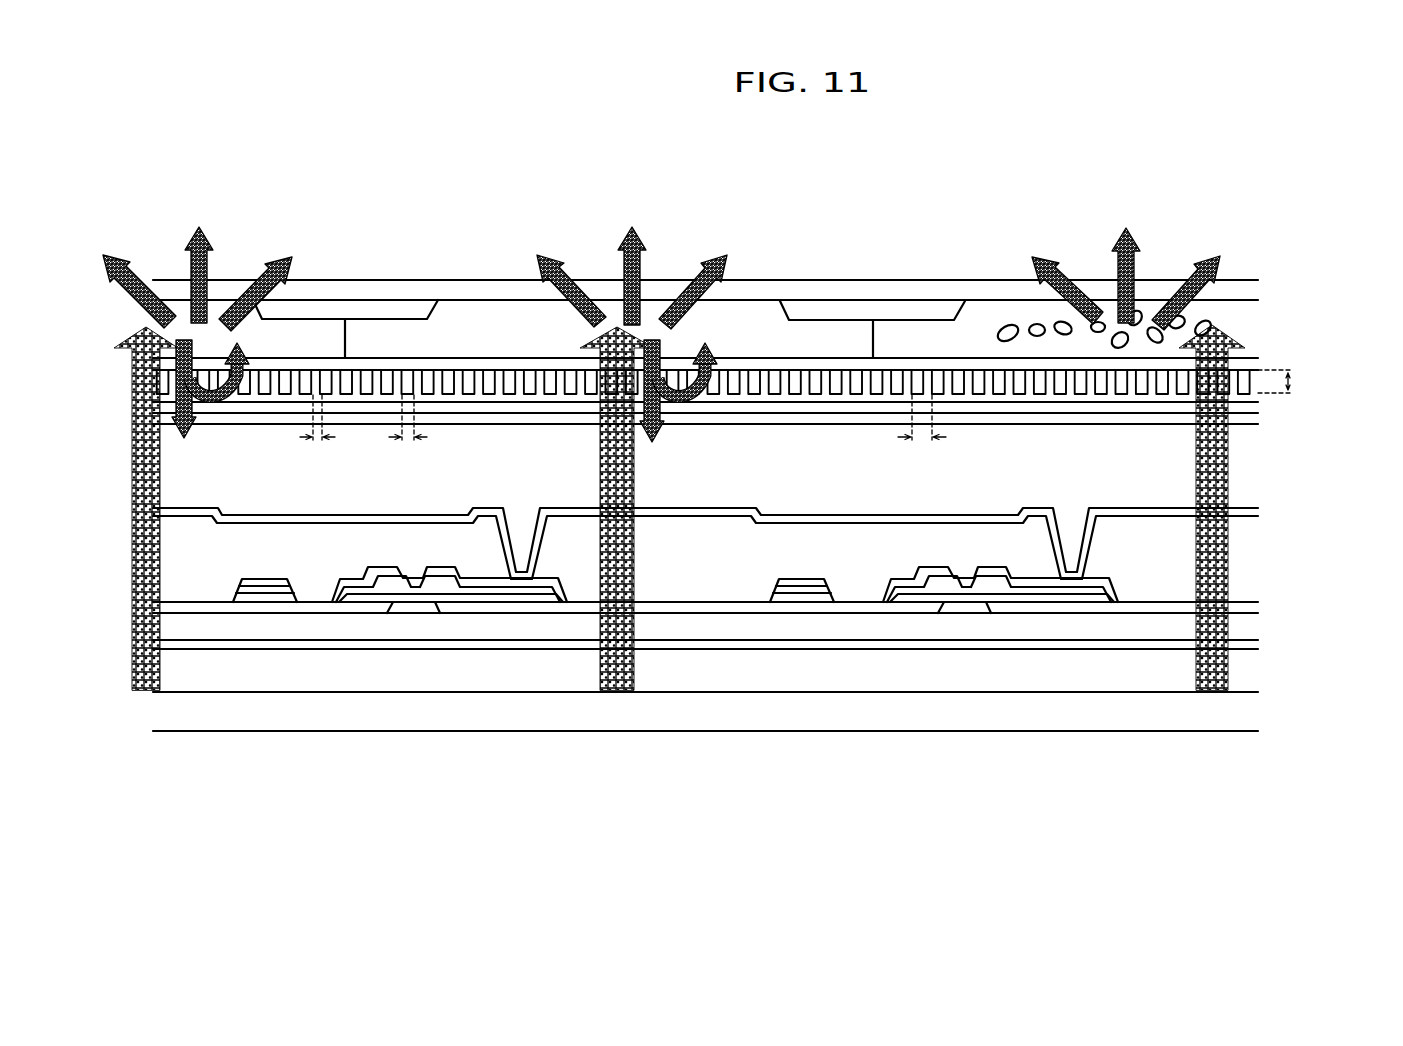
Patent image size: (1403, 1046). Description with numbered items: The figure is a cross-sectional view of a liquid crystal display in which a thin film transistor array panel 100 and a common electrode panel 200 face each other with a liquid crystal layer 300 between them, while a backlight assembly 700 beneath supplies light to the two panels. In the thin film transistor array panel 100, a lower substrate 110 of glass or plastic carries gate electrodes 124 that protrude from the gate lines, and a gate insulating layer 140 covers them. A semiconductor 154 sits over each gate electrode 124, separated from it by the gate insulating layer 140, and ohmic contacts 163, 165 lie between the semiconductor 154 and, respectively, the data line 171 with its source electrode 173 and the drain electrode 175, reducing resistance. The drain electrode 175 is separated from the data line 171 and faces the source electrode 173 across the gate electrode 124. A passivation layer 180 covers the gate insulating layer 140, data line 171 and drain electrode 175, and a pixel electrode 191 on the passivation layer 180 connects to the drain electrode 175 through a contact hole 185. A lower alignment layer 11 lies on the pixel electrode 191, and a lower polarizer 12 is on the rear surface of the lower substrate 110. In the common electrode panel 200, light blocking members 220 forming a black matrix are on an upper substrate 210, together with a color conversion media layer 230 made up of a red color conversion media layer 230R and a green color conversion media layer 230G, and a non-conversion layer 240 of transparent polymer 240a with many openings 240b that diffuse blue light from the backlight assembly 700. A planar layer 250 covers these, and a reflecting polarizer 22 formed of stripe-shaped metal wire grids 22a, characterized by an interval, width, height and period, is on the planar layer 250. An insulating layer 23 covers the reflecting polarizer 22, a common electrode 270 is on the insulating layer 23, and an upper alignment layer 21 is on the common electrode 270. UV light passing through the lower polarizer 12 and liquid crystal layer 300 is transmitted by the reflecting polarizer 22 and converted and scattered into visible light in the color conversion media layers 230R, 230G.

The common electrode panel 200 is at (772, 297).
The upper substrate 210 is at (1239, 290).
The light blocking member 220 is at (388, 308).
The color conversion media layer 230 is at (384, 230).
The red color conversion media layer 230R is at (303, 332).
The green color conversion media layer 230G is at (425, 252).
The reflecting polarizer 22 is at (835, 259).
The wire grid 22a is at (792, 370).
The non-conversion layer 240 is at (1077, 234).
The transparent polymer 240a is at (958, 343).
The opening 240b is at (1003, 323).
The planar layer 250 is at (1253, 363).
The insulating layer 23 is at (1237, 398).
The common electrode 270 is at (1237, 409).
The upper alignment layer 21 is at (738, 448).
The liquid crystal layer 300 is at (745, 443).
The thin film transistor array panel 100 is at (772, 626).
The lower alignment layer 11 is at (1262, 508).
The pixel electrode 191 is at (1262, 516).
The contact hole 185 is at (525, 513).
The passivation layer 180 is at (1255, 567).
The gate insulating layer 140 is at (1262, 602).
The lower substrate 110 is at (1262, 614).
The lower polarizer 12 is at (1262, 645).
The data line 171 is at (277, 586).
The semiconductor 154 is at (245, 600).
The ohmic contact 163 is at (365, 590).
The ohmic contact 165 is at (492, 591).
The source electrode 173 is at (341, 583).
The drain electrode 175 is at (553, 584).
The gate electrode 124 is at (417, 609).
The backlight assembly 700 is at (683, 715).